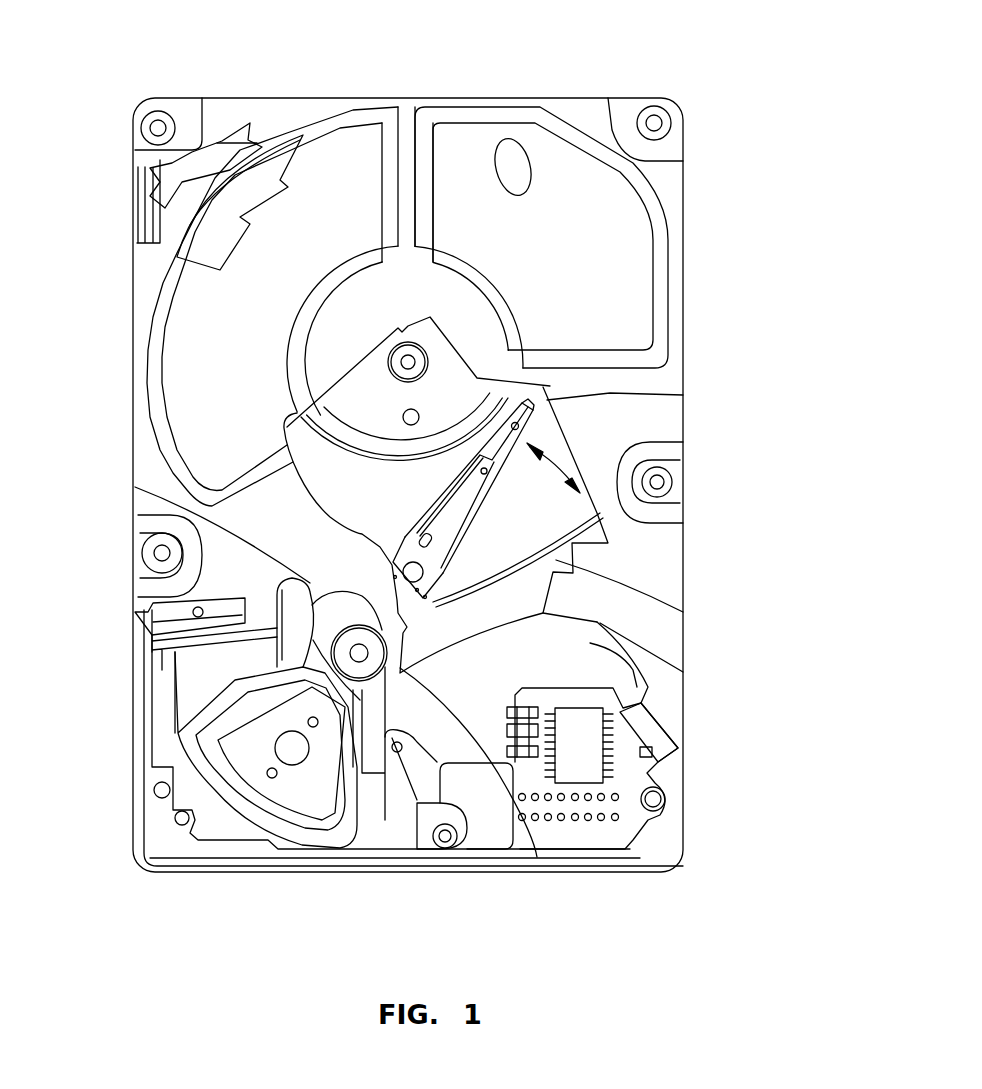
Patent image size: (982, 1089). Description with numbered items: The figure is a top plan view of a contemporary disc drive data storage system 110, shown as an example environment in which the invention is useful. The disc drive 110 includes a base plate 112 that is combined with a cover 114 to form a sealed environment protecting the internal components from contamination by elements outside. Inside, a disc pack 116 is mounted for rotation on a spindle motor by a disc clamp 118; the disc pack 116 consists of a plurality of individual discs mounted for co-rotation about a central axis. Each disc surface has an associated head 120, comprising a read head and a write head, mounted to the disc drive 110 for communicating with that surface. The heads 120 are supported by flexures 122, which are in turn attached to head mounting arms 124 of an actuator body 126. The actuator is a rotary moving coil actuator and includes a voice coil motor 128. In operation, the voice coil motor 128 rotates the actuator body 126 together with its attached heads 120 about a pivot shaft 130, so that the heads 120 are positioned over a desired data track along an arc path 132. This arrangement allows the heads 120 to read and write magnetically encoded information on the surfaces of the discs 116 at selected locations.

The disc drive data storage system 110 is at (116, 441).
The base plate 112 is at (684, 797).
The cover 114 is at (407, 107).
The disc pack 116 is at (413, 609).
The disc clamp 118 is at (443, 378).
The head 120 is at (545, 390).
The flexure 122 is at (463, 507).
The head mounting arm 124 is at (543, 613).
The actuator body 126 is at (327, 612).
The voice coil motor 128 is at (180, 708).
The pivot shaft 130 is at (363, 657).
The arc path 132 is at (560, 423).